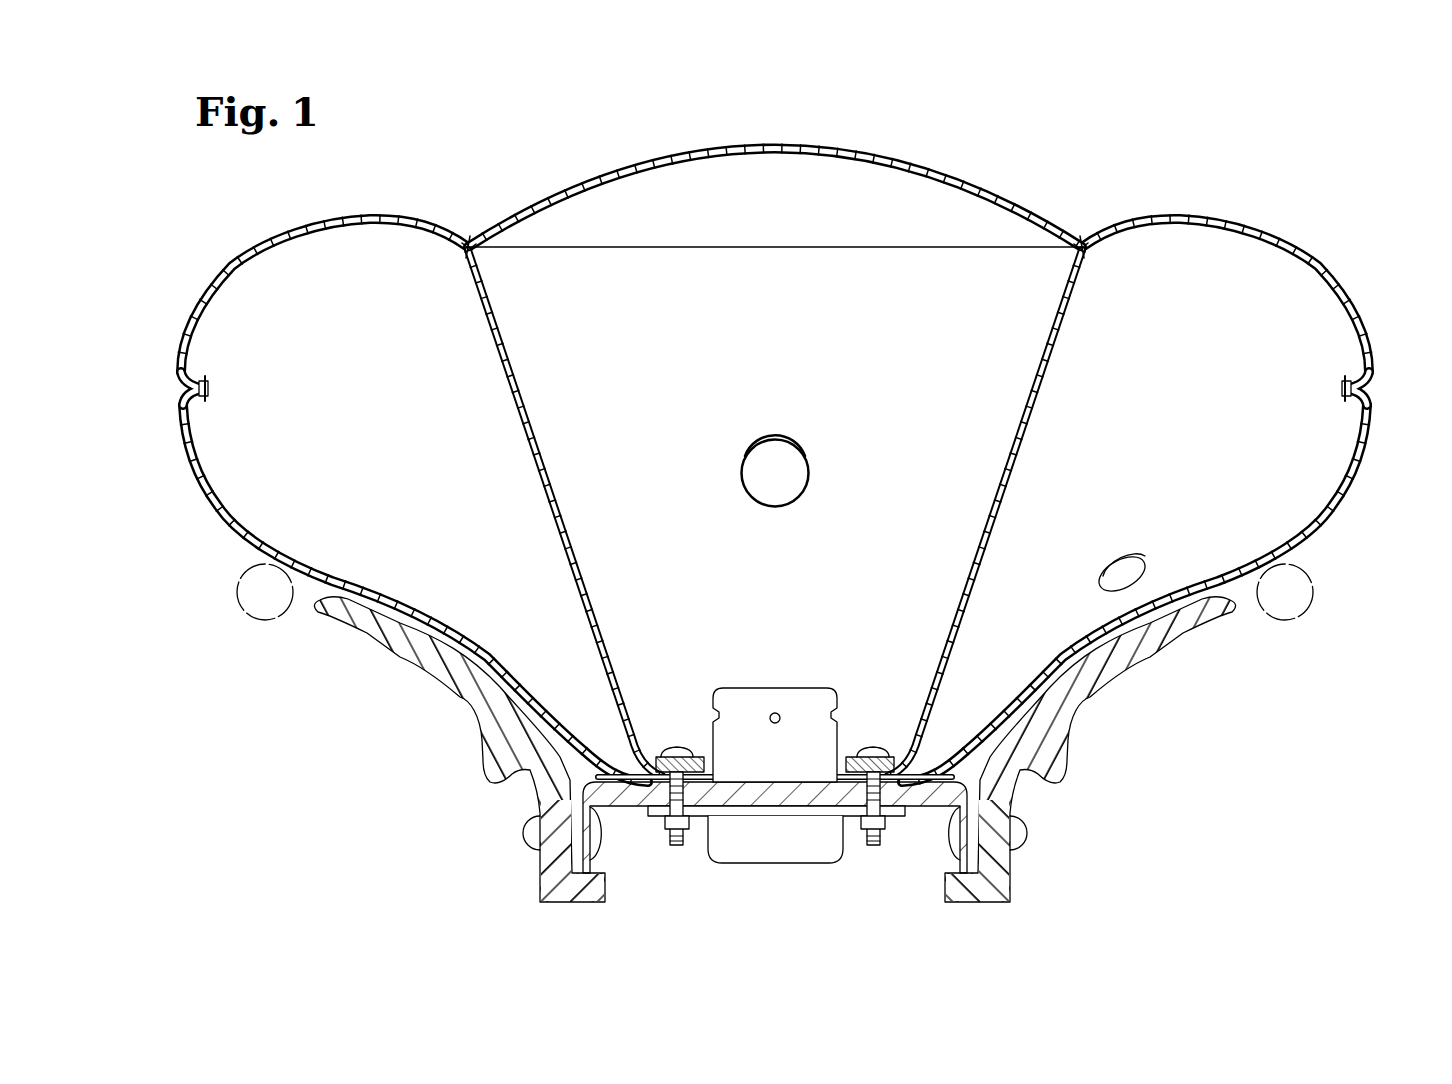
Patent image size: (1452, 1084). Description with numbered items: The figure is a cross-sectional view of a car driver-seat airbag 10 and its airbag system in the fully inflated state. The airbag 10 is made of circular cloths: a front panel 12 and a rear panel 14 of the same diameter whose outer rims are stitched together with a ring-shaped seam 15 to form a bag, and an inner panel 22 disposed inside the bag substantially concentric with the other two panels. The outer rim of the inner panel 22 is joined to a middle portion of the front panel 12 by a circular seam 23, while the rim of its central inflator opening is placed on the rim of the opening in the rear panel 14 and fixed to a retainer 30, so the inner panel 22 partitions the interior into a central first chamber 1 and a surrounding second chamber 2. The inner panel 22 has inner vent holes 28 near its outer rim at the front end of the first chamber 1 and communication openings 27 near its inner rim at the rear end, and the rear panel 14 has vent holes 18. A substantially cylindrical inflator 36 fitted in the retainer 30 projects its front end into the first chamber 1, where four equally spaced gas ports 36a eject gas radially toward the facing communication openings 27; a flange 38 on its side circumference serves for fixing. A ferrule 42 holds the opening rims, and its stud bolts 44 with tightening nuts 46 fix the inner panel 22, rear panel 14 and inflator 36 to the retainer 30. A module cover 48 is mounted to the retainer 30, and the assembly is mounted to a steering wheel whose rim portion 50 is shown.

The first chamber 1 is at (607, 402).
The second chamber 2 is at (334, 426).
The airbag 10 is at (1235, 183).
The front panel 12 is at (1313, 250).
The rear panel 14 is at (1350, 492).
The seam 15 is at (211, 400).
The vent holes 18 is at (1142, 560).
The inner panel 22 is at (1085, 297).
The seam 23 is at (458, 258).
The communication openings 27 is at (612, 706).
The inner vent holes 28 is at (758, 447).
The retainer 30 is at (1025, 792).
The inflator 36 is at (790, 850).
The gas ports 36a is at (712, 717).
The flange 38 is at (730, 818).
The ferrule 42 is at (848, 750).
The stud bolts 44 is at (680, 862).
The tightening nuts 46 is at (662, 850).
The module cover 48 is at (380, 637).
The rim portion 50 is at (268, 621).